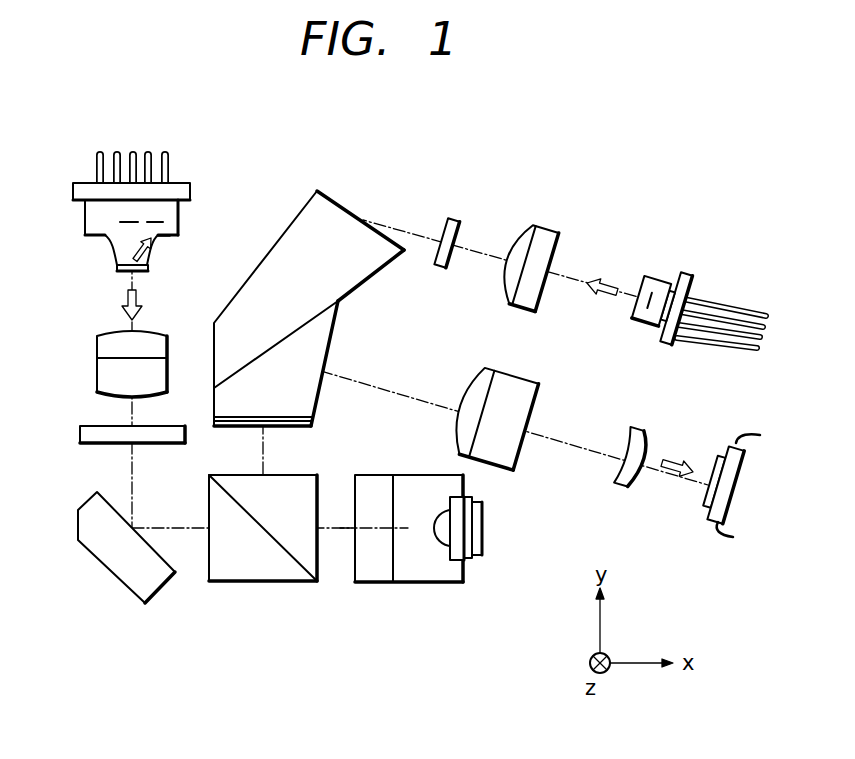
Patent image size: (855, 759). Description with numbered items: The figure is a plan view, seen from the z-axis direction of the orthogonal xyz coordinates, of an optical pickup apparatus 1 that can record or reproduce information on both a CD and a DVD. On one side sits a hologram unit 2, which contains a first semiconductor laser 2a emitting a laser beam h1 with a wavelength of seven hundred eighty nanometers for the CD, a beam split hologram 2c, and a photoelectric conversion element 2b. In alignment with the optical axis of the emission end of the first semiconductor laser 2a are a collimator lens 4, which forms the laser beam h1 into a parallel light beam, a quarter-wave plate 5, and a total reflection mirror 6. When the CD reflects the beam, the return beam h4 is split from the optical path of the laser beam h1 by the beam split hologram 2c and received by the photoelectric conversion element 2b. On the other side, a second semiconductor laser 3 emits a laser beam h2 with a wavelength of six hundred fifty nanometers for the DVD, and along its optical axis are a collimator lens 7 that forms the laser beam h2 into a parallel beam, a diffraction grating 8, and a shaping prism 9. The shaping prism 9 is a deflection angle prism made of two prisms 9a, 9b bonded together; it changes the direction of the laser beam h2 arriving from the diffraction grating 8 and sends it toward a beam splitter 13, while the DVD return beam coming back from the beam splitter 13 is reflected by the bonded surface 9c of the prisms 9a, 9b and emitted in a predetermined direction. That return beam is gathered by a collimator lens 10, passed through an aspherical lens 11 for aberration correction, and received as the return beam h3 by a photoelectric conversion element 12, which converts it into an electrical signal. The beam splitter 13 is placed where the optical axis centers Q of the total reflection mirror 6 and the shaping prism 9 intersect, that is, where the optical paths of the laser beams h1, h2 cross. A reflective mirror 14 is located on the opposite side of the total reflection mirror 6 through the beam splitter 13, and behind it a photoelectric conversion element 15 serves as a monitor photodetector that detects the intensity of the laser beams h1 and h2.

The optical pickup apparatus 1 is at (436, 157).
The hologram unit 2 is at (88, 228).
The first semiconductor laser 2a is at (120, 222).
The photoelectric conversion element 2b is at (157, 230).
The beam split hologram 2c is at (116, 270).
The second semiconductor laser 3 is at (652, 274).
The collimator lens 4 is at (100, 368).
The quarter-wave plate 5 is at (80, 435).
The total reflection mirror 6 is at (105, 559).
The collimator lens 7 is at (546, 224).
The diffraction grating 8 is at (455, 216).
The shaping prism 9 is at (274, 224).
The prism 9a is at (370, 268).
The prism 9b is at (312, 398).
The bonded surface 9c is at (320, 331).
The collimator lens 10 is at (512, 380).
The aspherical lens 11 is at (636, 427).
The photoelectric conversion element 12 is at (740, 480).
The beam splitter 13 is at (295, 583).
The reflective mirror 14 is at (435, 583).
The photoelectric conversion element 15 is at (484, 525).
The laser beam h1 is at (140, 300).
The laser beam h2 is at (611, 284).
The return beam h3 is at (678, 456).
The laser beam h4 is at (150, 258).
The optical axis center Q is at (265, 450).